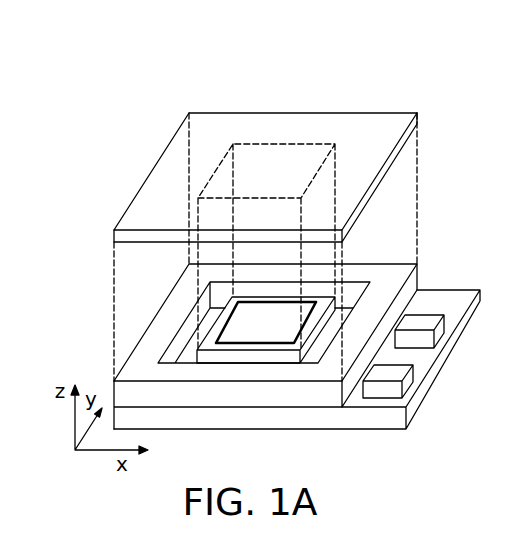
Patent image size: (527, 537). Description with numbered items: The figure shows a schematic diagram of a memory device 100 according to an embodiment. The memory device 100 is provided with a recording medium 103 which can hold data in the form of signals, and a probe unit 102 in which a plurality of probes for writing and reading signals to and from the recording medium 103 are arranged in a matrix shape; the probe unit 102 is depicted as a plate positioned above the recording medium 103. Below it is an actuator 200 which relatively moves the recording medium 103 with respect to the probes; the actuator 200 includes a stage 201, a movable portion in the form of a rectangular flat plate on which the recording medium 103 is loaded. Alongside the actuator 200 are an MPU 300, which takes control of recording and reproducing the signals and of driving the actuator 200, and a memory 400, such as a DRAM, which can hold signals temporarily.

The memory device 100 is at (290, 255).
The probe unit 102 is at (305, 122).
The recording medium 103 is at (240, 333).
The actuator 200 is at (150, 345).
The stage 201 is at (282, 352).
The MPU 300 is at (397, 387).
The memory 400 is at (427, 323).